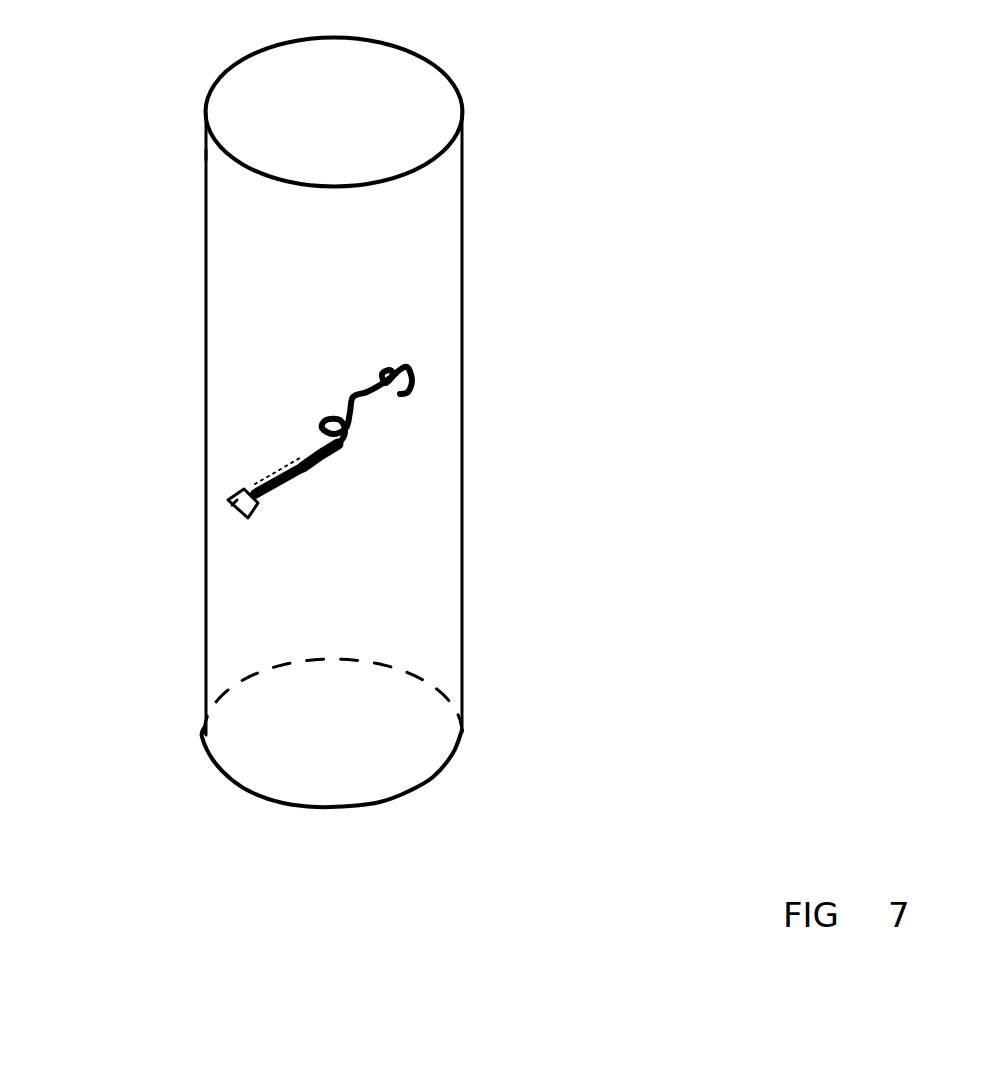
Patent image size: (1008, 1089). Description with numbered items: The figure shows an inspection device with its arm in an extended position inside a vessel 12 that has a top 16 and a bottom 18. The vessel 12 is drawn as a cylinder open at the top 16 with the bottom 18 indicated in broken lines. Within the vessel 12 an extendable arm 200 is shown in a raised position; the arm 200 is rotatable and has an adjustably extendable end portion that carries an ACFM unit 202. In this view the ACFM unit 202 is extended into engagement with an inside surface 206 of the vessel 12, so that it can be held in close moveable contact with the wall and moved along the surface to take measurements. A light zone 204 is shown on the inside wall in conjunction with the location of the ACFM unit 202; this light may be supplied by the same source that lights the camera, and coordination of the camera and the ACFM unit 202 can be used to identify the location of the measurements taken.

The vessel 12 is at (462, 352).
The top 16 is at (427, 63).
The bottom 18 is at (380, 803).
The extendable arm 200 is at (307, 470).
The ACFM unit 202 is at (237, 507).
The light zone 204 is at (242, 517).
The inside surface 206 is at (203, 152).